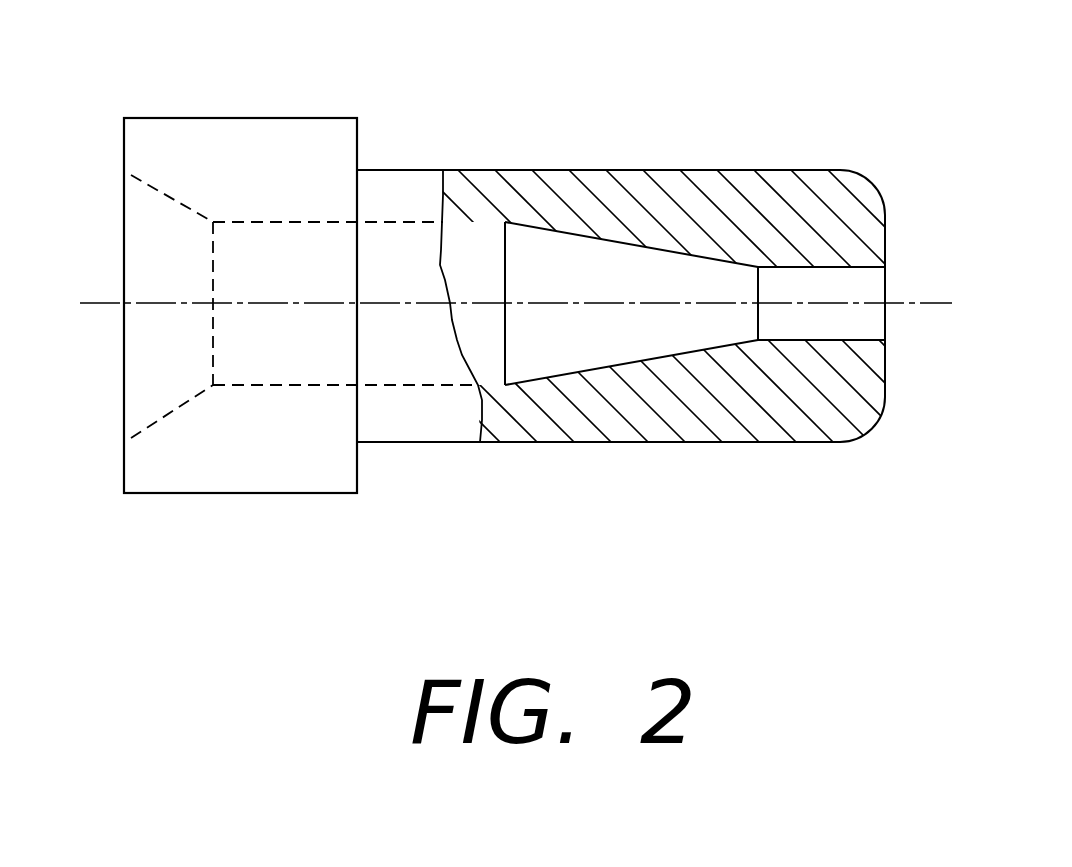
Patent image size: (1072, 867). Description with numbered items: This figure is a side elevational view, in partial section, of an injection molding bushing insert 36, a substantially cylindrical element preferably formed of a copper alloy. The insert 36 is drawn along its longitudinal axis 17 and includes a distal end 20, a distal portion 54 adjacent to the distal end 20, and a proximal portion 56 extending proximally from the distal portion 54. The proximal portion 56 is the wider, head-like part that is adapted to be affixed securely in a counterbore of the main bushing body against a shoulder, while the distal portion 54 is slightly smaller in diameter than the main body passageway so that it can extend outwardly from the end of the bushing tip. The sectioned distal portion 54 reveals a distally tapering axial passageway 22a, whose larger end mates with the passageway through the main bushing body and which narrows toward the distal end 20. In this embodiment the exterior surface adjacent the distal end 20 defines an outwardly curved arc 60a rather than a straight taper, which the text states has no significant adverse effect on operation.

The bushing insert 36 is at (848, 80).
The outwardly curved arc exterior surface 60a is at (871, 176).
The longitudinal axis 17 is at (912, 300).
The distal end 20 is at (886, 357).
The axial passageway 22a is at (695, 303).
The distal portion 54 is at (617, 465).
The proximal portion 56 is at (235, 504).